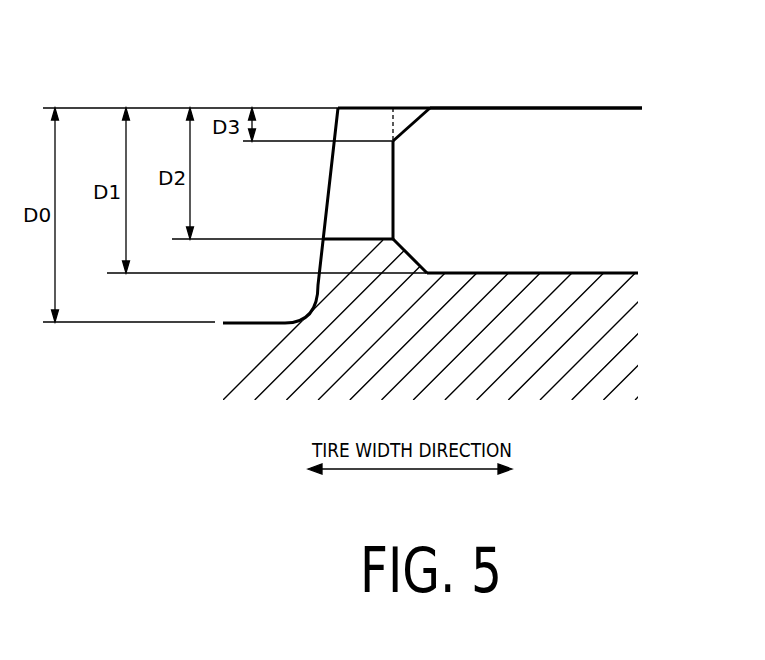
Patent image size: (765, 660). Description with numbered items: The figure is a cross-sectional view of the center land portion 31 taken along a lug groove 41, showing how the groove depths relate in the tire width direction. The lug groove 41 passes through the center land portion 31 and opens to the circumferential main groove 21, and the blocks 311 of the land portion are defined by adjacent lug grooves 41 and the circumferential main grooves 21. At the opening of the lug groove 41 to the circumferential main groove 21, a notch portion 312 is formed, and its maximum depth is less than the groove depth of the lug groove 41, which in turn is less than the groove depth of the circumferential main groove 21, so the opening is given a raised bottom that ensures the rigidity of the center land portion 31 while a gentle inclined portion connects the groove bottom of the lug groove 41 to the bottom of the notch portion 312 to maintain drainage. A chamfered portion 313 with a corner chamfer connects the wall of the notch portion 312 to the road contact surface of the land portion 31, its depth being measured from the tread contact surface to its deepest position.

The circumferential main groove 21 is at (300, 128).
The center land portion 31 is at (601, 100).
The block 311 is at (547, 107).
The notch portion 312 is at (338, 237).
The chamfered portion 313 is at (405, 128).
The lug groove 41 is at (610, 273).